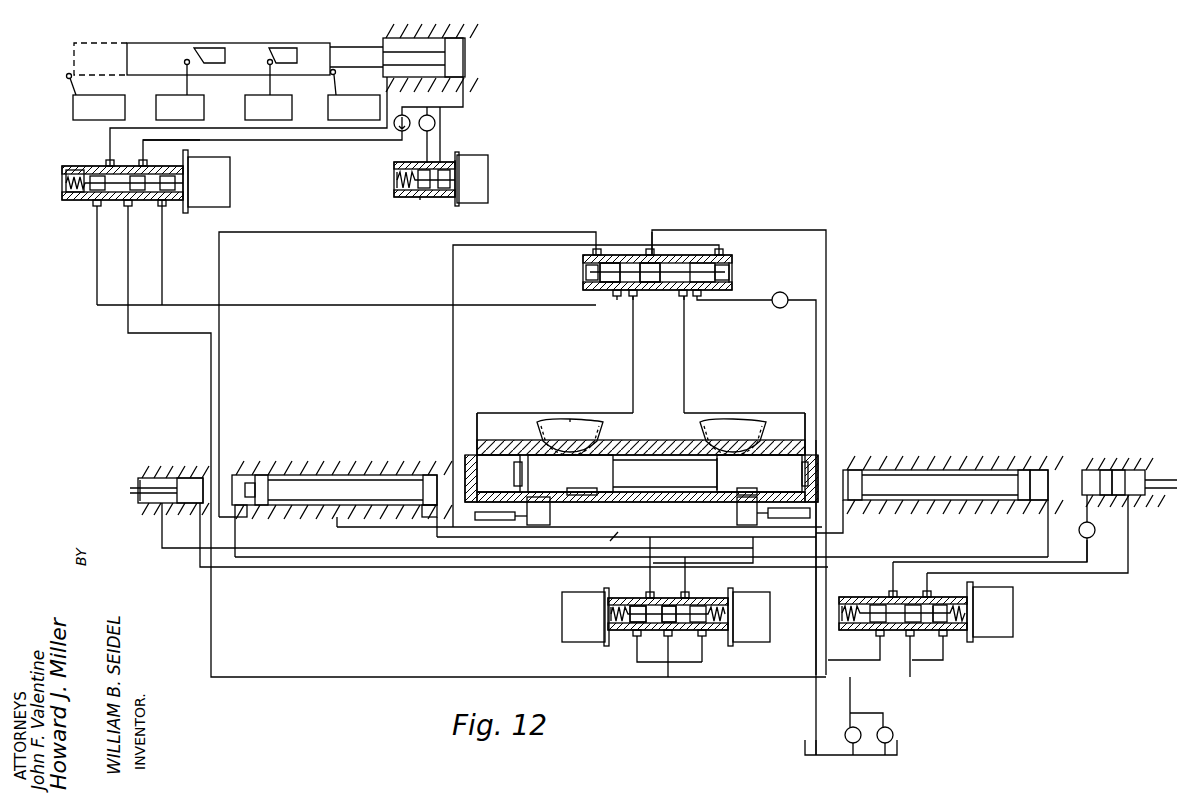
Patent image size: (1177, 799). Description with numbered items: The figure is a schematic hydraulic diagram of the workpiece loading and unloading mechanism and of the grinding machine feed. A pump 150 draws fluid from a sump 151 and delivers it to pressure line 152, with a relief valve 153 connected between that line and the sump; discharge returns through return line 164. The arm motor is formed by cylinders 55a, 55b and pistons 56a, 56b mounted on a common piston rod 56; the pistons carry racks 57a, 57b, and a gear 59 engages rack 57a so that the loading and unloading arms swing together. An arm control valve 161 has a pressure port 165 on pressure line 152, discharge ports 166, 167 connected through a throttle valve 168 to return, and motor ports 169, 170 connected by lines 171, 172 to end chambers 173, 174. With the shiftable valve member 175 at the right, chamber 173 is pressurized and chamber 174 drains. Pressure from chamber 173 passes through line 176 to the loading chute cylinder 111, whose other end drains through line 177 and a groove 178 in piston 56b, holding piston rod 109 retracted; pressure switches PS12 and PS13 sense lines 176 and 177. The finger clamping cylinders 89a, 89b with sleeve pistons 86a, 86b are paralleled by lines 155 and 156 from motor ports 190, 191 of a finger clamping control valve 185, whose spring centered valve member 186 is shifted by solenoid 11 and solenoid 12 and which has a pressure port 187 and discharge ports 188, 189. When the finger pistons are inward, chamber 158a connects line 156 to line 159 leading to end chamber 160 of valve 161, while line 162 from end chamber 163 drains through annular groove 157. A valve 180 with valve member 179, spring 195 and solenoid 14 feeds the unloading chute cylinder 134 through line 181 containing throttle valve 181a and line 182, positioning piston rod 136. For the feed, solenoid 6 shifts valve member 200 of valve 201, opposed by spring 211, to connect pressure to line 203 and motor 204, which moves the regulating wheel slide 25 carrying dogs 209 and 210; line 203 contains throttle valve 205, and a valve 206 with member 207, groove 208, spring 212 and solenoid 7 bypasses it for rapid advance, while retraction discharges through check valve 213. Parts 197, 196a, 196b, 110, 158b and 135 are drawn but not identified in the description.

The regulating wheel slide 25 is at (150, 70).
The dog 210 is at (198, 47).
The dog 209 is at (291, 47).
The motor 204 is at (474, 44).
The check valve 213 is at (395, 133).
The throttle valve 205 is at (442, 113).
The line 203 is at (238, 132).
The valve 201 is at (62, 180).
The spring 211 is at (93, 166).
The solenoid 6SOL 6 is at (206, 181).
The valve member 200 is at (165, 208).
The valve 206 is at (394, 176).
The spring 212 is at (404, 189).
The groove 208 is at (438, 198).
The solenoid 7SOL 7 is at (471, 179).
The valve member 207 is at (447, 160).
The return line 164 is at (292, 304).
The pressure line 152 is at (170, 336).
The line 159 is at (220, 400).
The line 162 is at (454, 372).
The end chamber 163 is at (724, 255).
The end chamber 160 is at (583, 278).
The arm control valve 161 is at (732, 266).
The pressure port 165 is at (645, 255).
The shiftable valve member 175 is at (676, 255).
The discharge port 166 is at (614, 303).
The motor port 169 is at (640, 300).
The motor port 170 is at (690, 305).
The discharge port 167 is at (702, 303).
The throttle valve 168 is at (790, 310).
The line 171 is at (633, 355).
The line 172 is at (685, 384).
The piston rod 56 is at (688, 476).
The end chamber 173 is at (498, 481).
The piston 56a is at (556, 474).
The piston 56b is at (762, 473).
The groove 178 is at (733, 474).
The rack 57a is at (604, 426).
The rack 57b is at (699, 428).
The gear 59 is at (566, 419).
The cylinder 55a is at (522, 443).
The cylinder 55b is at (768, 440).
The port 197 is at (600, 487).
The pressure responsive switch PS12 is at (540, 517).
The pressure switch PS13 is at (737, 518).
The end chamber 174 is at (820, 448).
The cylinder 89a is at (311, 468).
The chamber 158a is at (238, 470).
The sleeve piston 86a is at (418, 470).
The port 196a is at (437, 470).
The annular groove 157 is at (298, 512).
The piston rod 109 is at (130, 490).
The piston 110 is at (204, 476).
The loading chute cylinder 111 is at (162, 476).
The line 176 is at (162, 552).
The line 177 is at (310, 567).
The cylinder 89b is at (993, 468).
The piston 196b is at (855, 468).
The sleeve piston 86b is at (955, 468).
The piston 158b is at (1052, 468).
The line 155 is at (852, 523).
The line 156 is at (920, 557).
The cylinder 134 is at (1104, 468).
The piston 135 is at (1122, 466).
The piston rod 136 is at (1170, 490).
The line 181 is at (1093, 540).
The throttle valve 181a is at (1078, 535).
The line 182 is at (1030, 567).
The finger clamping control valve 185 is at (690, 598).
The motor port 190 is at (648, 598).
The motor port 191 is at (683, 598).
The solenoid 11SOL 11 is at (585, 617).
The solenoid 12SOL 12 is at (749, 617).
The spring centered movable valve member 186 is at (624, 632).
The discharge port 188 is at (638, 637).
The pressure port 187 is at (669, 637).
The discharge port 189 is at (703, 637).
The valve 180 is at (870, 584).
The solenoid 14SOL 14 is at (990, 612).
The spring 195 is at (866, 630).
The valve member 179 is at (955, 632).
The relief valve 153 is at (888, 726).
The pump 150 is at (848, 756).
The sump 151 is at (805, 750).